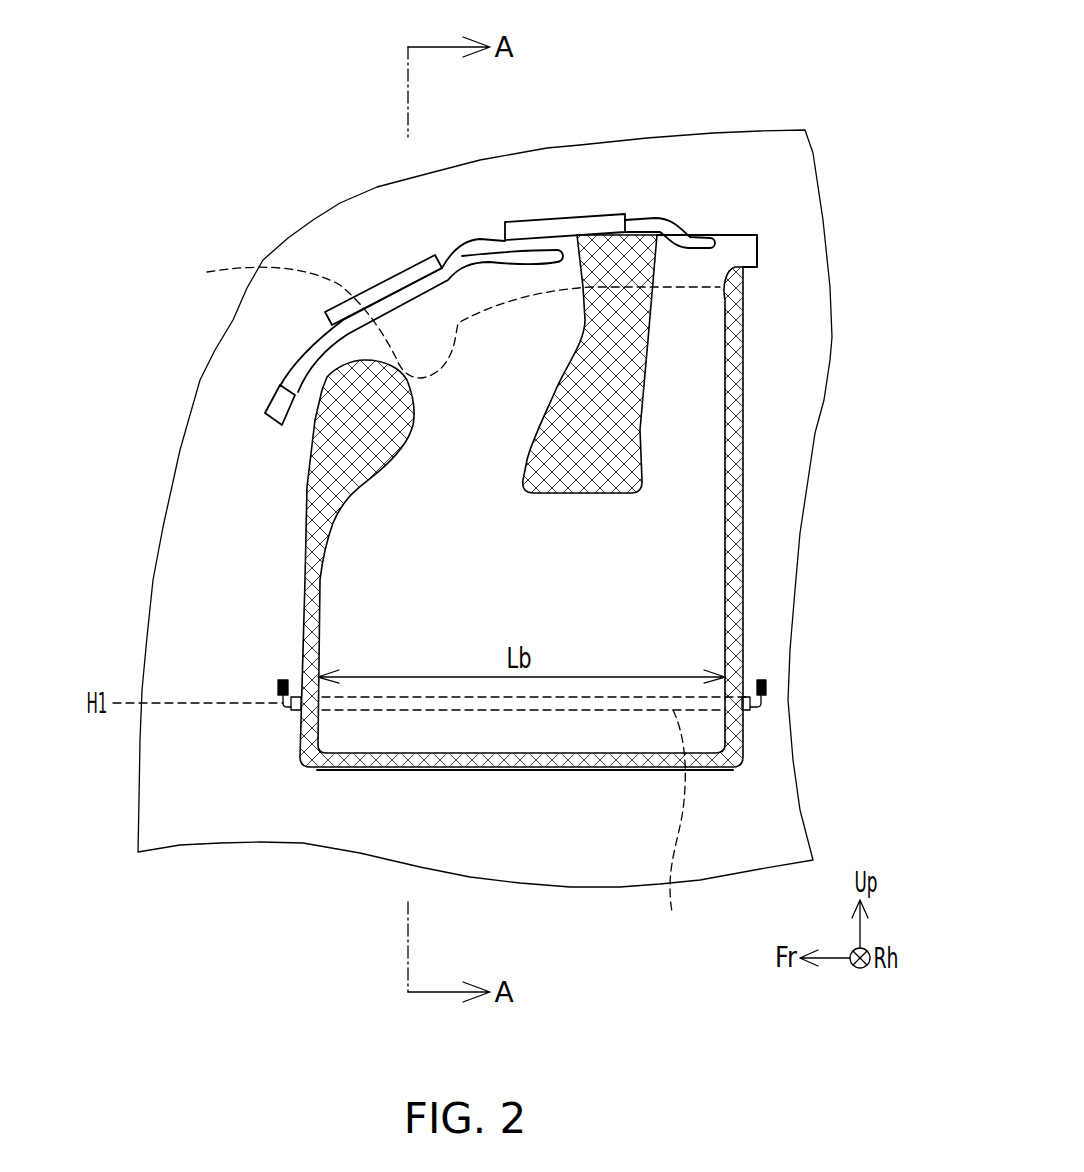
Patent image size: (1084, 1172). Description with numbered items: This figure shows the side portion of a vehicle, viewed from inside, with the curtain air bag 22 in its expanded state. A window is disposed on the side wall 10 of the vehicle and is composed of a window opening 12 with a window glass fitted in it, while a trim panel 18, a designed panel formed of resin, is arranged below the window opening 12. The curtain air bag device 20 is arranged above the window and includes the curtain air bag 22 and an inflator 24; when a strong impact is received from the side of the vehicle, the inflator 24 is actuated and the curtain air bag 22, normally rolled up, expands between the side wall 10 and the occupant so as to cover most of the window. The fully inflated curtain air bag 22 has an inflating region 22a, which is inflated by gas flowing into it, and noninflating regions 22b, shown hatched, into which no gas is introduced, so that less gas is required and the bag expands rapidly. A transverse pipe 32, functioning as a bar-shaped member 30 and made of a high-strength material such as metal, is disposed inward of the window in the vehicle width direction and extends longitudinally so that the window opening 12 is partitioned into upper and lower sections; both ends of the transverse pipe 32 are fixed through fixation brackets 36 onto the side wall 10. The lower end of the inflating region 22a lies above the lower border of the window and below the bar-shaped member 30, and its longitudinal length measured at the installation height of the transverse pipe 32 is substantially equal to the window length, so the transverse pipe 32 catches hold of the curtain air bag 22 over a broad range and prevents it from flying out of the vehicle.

The side wall 10 is at (220, 517).
The window opening 12 is at (449, 316).
The trim panel 18 is at (604, 818).
The curtain air bag device 20 is at (648, 178).
The curtain air bag 22 is at (630, 449).
The inflating region 22a is at (688, 437).
The noninflating region 22b is at (610, 360).
The inflator 24 is at (410, 277).
The bar-shaped member 30 is at (535, 820).
The transverse pipe 32 is at (535, 820).
The fixation bracket 36 is at (280, 680).